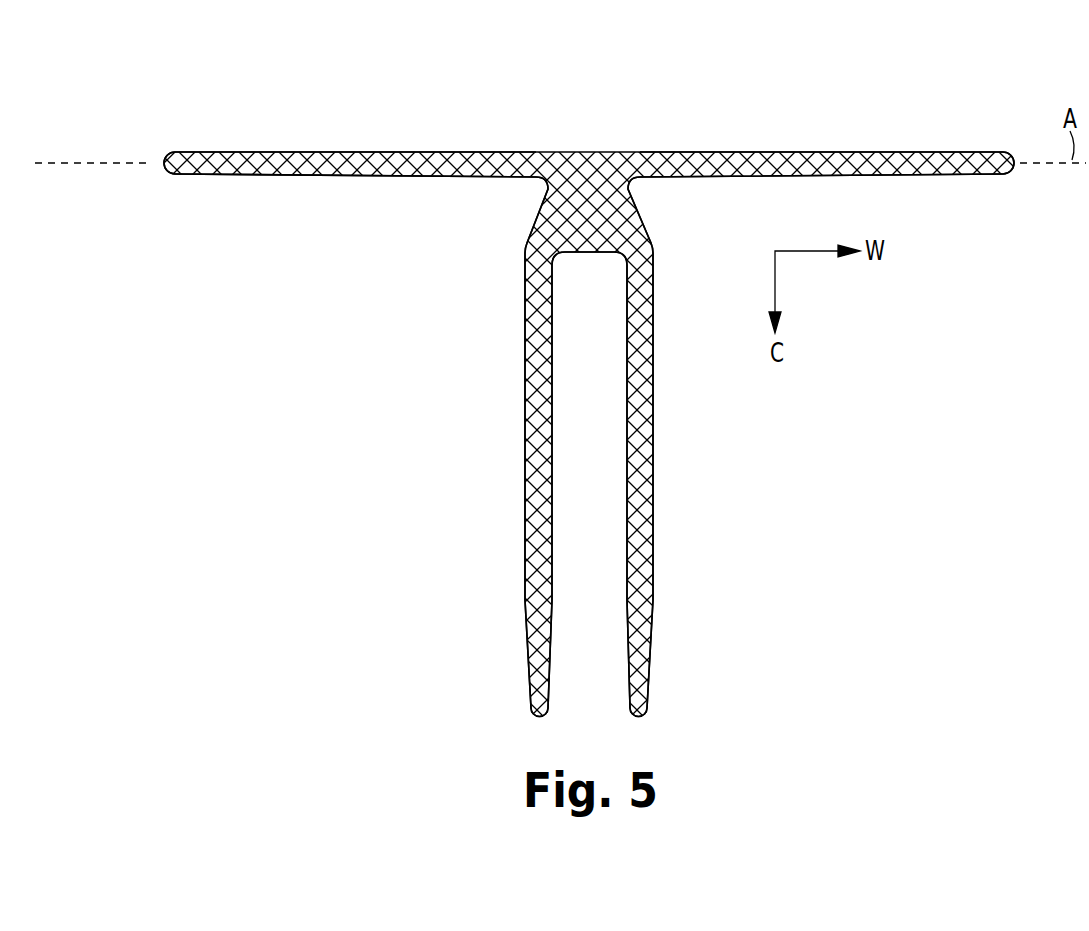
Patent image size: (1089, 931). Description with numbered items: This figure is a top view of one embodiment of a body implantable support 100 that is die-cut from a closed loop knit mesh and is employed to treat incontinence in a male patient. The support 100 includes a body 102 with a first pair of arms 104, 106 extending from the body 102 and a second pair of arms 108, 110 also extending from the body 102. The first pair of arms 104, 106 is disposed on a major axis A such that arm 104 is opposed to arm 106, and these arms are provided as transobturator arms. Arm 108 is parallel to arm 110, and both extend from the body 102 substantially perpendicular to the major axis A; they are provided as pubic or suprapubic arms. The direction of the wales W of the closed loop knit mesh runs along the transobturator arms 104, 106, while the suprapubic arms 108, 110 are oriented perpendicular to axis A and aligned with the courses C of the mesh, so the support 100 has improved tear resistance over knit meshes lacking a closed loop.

The body implantable support 100 is at (778, 75).
The body 102 is at (562, 214).
The arm 104 is at (288, 152).
The arm 106 is at (878, 165).
The arm 108 is at (536, 472).
The arm 110 is at (640, 490).